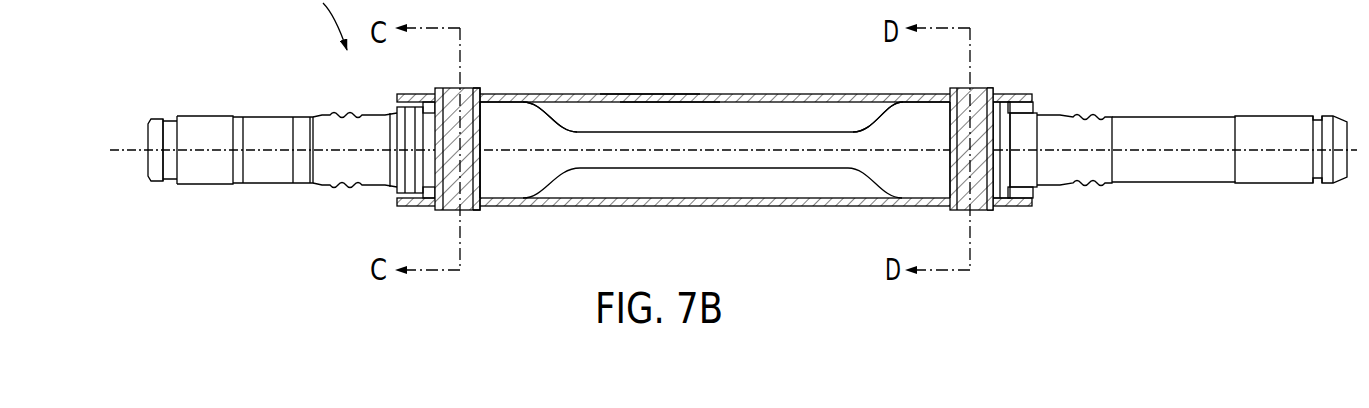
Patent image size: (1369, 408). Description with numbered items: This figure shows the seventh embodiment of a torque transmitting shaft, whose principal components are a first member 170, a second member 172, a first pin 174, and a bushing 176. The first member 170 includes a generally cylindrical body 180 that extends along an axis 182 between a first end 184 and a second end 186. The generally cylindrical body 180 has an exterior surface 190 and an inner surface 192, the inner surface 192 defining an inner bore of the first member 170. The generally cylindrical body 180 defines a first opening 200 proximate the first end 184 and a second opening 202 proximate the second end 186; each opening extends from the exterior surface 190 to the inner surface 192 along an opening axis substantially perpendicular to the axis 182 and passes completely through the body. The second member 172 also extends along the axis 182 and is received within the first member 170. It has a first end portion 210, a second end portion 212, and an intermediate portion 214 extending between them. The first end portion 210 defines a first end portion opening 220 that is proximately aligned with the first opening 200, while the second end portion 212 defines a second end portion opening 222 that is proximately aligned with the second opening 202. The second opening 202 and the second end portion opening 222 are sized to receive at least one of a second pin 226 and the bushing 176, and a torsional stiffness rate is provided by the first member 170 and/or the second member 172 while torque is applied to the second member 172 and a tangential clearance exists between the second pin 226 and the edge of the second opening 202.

The first member 170 is at (722, 80).
The second member 172 is at (315, 90).
The first pin 174 is at (467, 93).
The bushing 176 is at (482, 93).
The generally cylindrical body 180 is at (768, 97).
The axis 182 is at (122, 152).
The first end 184 is at (393, 100).
The second end 186 is at (1033, 98).
The exterior surface 190 is at (622, 97).
The inner surface 192 is at (662, 98).
The first opening 200 is at (483, 95).
The second opening 202 is at (948, 92).
The first end portion 210 is at (492, 172).
The second end portion 212 is at (927, 172).
The intermediate portion 214 is at (762, 170).
The first end portion opening 220 is at (485, 112).
The second end portion opening 222 is at (940, 113).
The second pin 226 is at (982, 90).